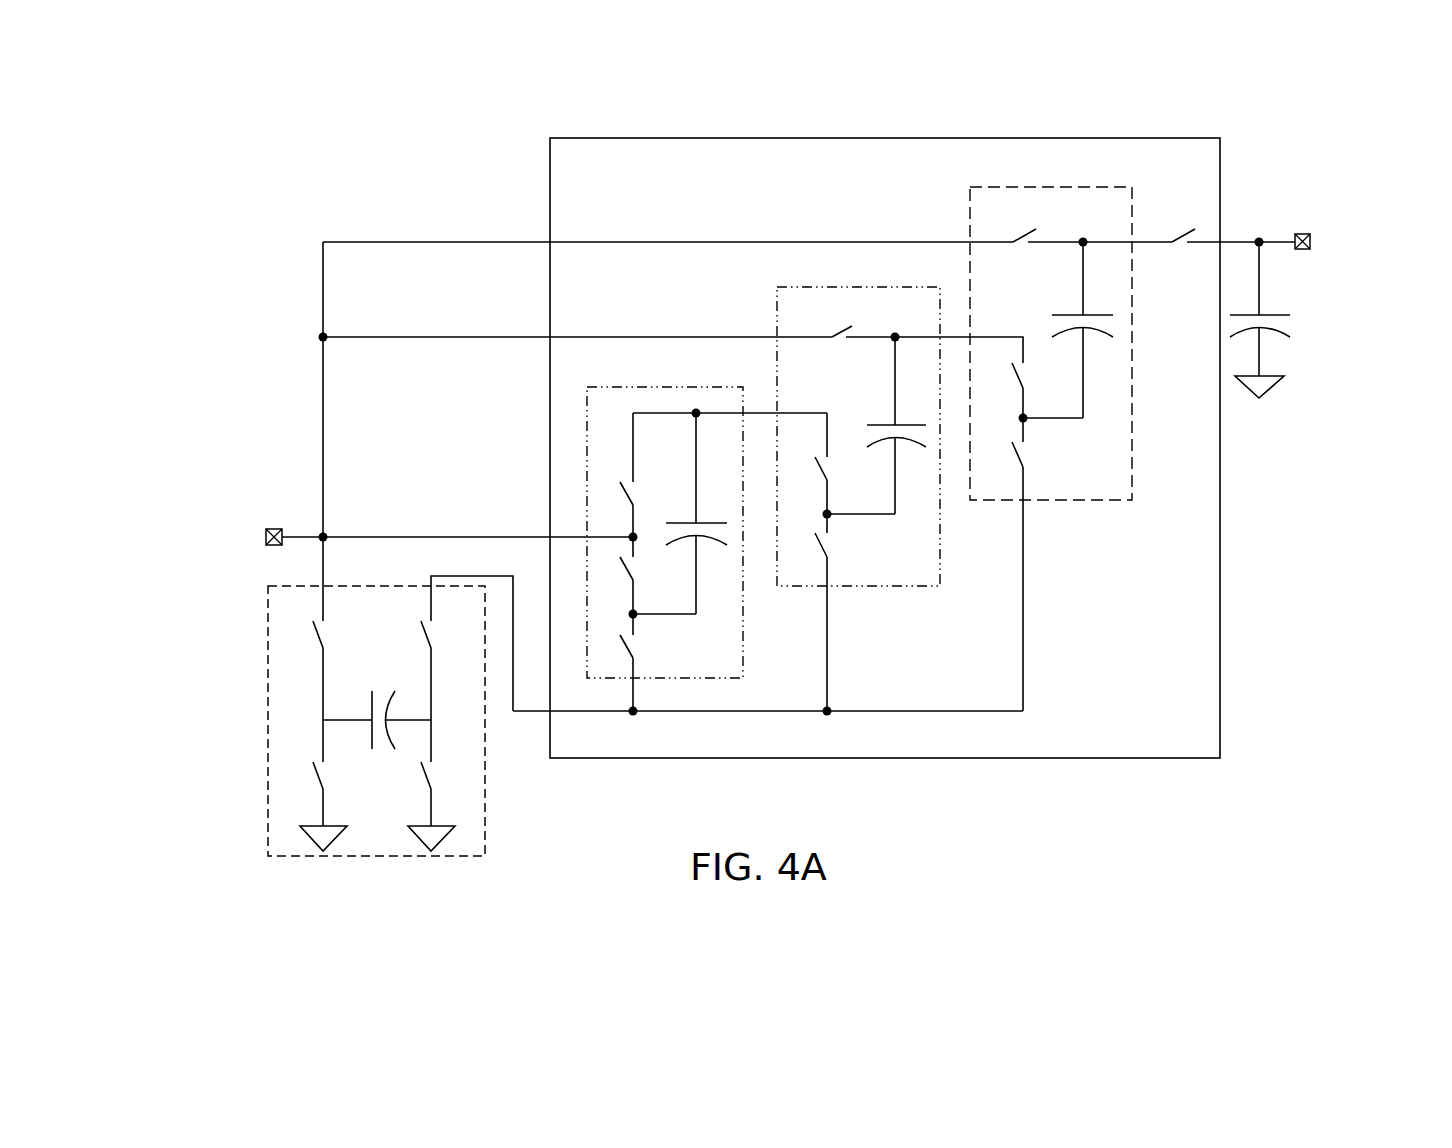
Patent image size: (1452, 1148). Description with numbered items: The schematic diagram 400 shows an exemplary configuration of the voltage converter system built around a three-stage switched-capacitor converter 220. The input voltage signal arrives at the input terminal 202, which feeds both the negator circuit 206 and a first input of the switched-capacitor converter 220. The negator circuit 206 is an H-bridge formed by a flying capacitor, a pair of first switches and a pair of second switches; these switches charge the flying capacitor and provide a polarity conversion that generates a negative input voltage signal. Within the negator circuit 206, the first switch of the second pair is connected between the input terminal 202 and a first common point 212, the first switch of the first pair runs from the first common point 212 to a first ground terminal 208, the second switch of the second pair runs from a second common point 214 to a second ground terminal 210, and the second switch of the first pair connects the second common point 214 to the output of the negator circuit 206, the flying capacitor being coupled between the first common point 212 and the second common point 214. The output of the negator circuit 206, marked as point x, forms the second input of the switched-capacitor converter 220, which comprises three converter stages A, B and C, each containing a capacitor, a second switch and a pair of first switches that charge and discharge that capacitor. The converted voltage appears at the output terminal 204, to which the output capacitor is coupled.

The schematic diagram 400 is at (300, 176).
The switched-capacitor converter 220 is at (885, 138).
The input terminal 202 is at (266, 537).
The output terminal 204 is at (1310, 241).
The negator circuit 206 is at (380, 757).
The first ground terminal 208 is at (323, 851).
The second ground terminal 210 is at (431, 851).
The first common point 212 is at (320, 720).
The second common point 214 is at (445, 720).